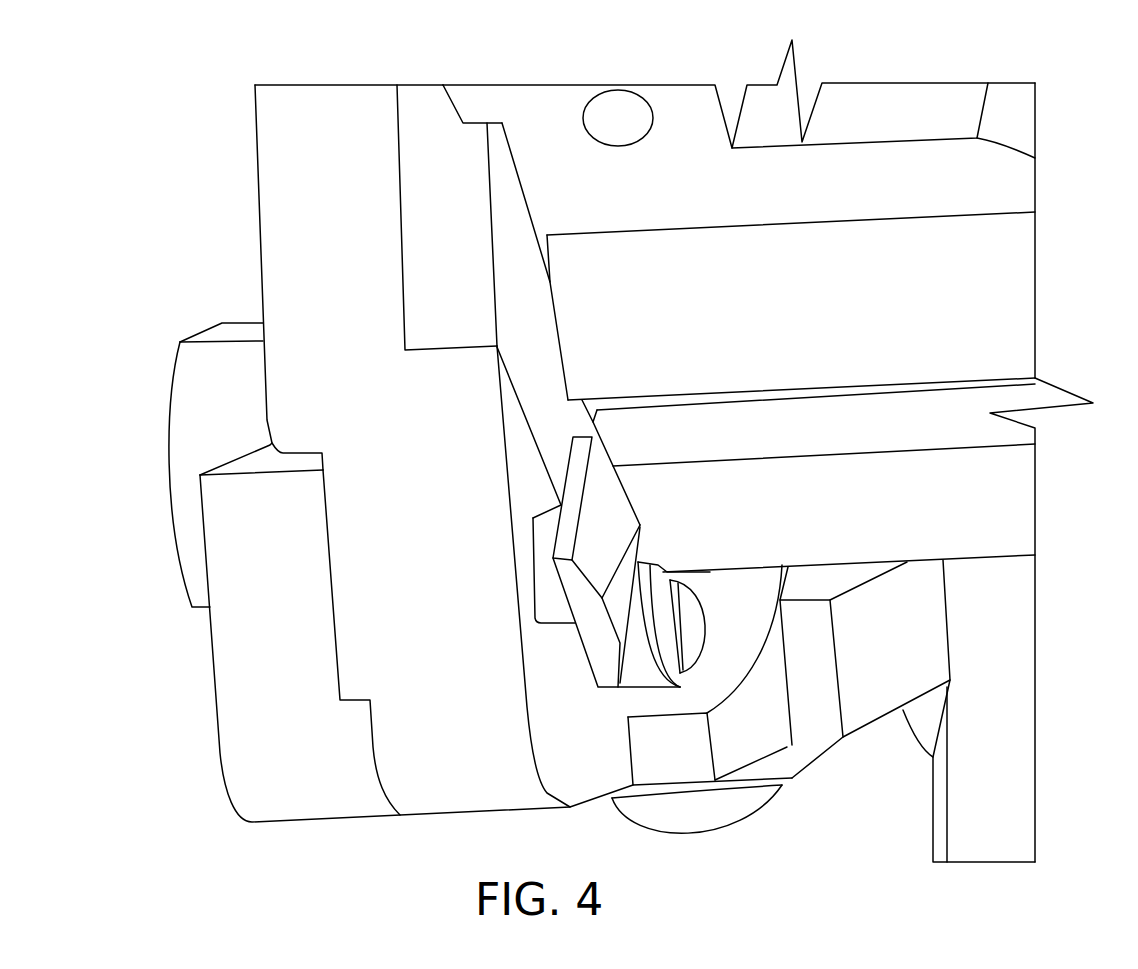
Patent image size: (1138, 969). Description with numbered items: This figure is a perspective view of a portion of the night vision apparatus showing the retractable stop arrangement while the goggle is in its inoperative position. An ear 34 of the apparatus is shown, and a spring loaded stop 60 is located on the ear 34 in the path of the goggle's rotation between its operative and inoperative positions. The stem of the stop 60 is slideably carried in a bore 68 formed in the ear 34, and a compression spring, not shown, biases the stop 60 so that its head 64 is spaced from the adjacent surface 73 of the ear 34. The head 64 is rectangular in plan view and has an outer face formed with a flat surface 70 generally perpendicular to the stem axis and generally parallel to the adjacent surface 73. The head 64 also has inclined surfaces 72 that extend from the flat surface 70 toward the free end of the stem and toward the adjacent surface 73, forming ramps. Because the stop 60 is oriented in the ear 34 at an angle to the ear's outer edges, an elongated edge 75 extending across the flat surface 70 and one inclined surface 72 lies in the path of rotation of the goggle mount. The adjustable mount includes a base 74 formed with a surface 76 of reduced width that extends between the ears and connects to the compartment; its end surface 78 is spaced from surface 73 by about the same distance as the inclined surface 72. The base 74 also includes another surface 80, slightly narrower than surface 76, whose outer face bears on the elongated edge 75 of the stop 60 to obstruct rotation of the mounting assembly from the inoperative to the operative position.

The ear 34 is at (445, 750).
The stop 60 is at (590, 437).
The head 64 is at (605, 457).
The bore 68 is at (533, 563).
The flat surface 70 is at (613, 567).
The inclined surface 72 is at (602, 512).
The adjacent surface 73 is at (548, 750).
The base 74 is at (997, 283).
The elongated edge 75 is at (617, 468).
The surface of reduced width 76 is at (623, 247).
The end surface 78 is at (553, 333).
The surface 80 is at (858, 530).